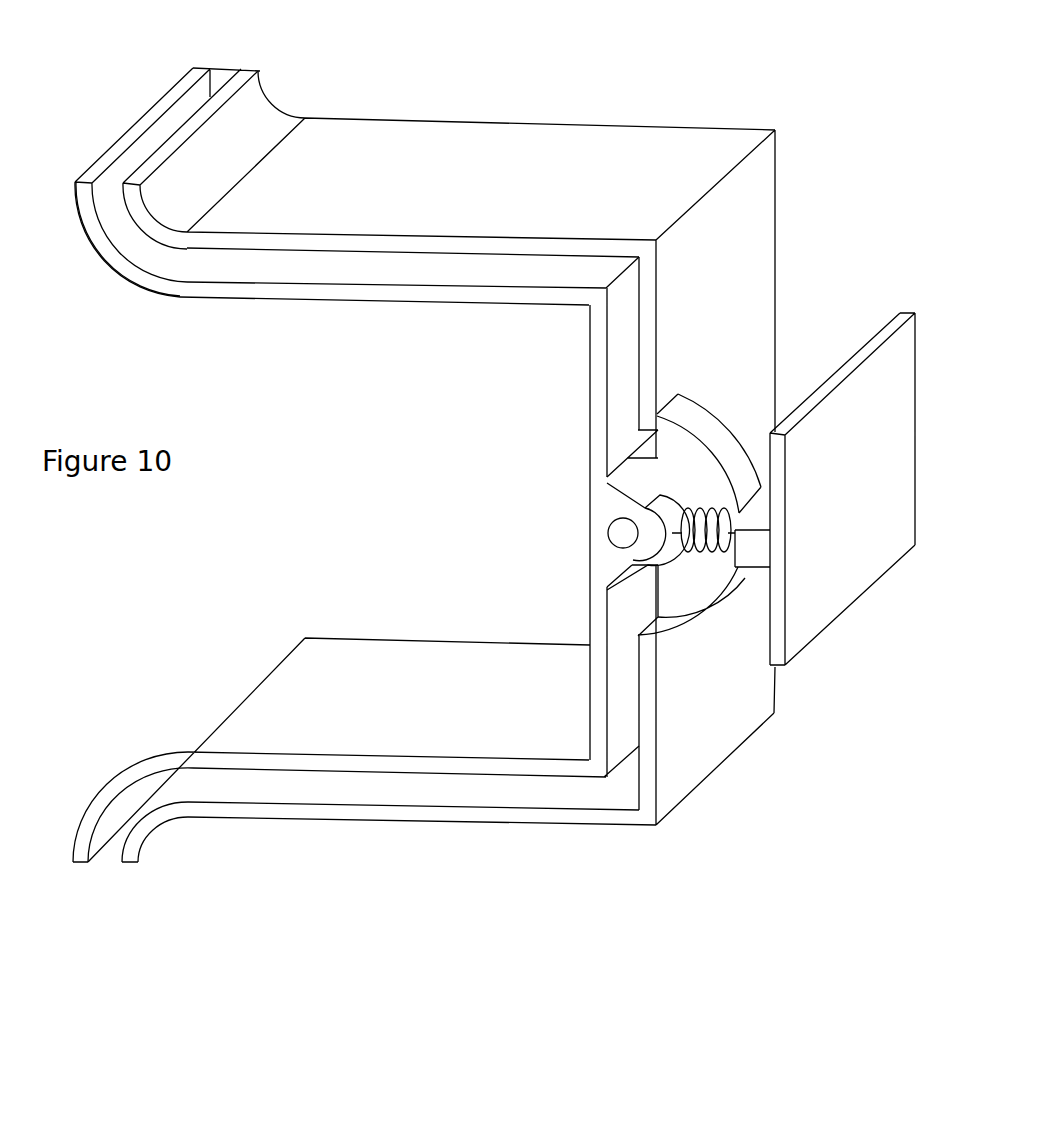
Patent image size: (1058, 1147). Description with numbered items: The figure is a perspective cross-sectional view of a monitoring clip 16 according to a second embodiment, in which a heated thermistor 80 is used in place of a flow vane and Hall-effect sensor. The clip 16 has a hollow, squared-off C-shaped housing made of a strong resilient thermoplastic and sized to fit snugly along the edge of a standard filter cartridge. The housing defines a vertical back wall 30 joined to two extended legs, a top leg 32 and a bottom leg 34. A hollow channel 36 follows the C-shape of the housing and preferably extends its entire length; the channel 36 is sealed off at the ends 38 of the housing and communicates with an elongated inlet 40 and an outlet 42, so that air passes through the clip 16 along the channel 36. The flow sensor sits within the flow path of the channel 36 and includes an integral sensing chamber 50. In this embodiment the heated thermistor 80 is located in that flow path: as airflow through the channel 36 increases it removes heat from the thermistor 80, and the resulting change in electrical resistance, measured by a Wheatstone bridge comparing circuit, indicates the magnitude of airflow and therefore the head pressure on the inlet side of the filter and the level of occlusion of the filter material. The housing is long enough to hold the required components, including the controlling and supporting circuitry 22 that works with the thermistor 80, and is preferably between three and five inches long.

The monitoring clip 16 is at (440, 518).
The controlling and supporting circuitry 22 is at (853, 585).
The vertical back wall 30 is at (716, 272).
The top leg 32 is at (472, 175).
The bottom leg 34 is at (385, 818).
The hollow channel 36 is at (282, 263).
The ends 38 is at (224, 76).
The elongated inlet 40 is at (148, 140).
The outlet 42 is at (107, 858).
The sensing chamber 50 is at (683, 593).
The heated thermistor 80 is at (699, 512).